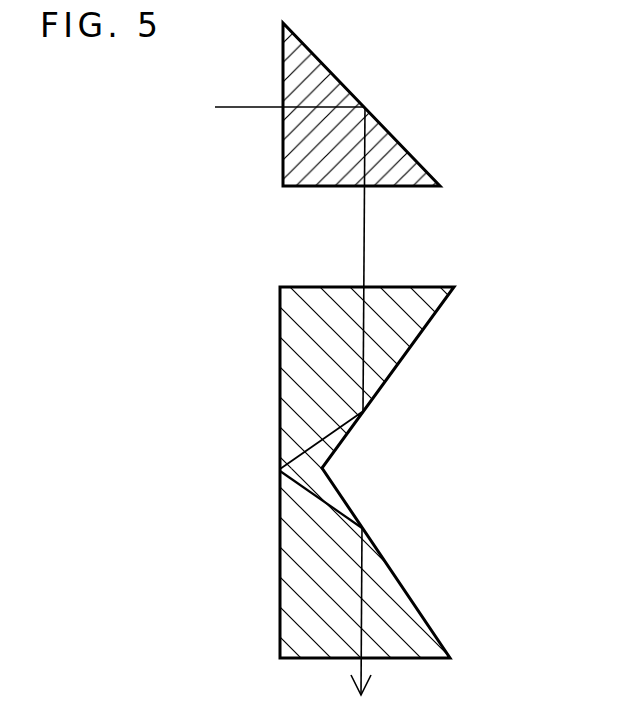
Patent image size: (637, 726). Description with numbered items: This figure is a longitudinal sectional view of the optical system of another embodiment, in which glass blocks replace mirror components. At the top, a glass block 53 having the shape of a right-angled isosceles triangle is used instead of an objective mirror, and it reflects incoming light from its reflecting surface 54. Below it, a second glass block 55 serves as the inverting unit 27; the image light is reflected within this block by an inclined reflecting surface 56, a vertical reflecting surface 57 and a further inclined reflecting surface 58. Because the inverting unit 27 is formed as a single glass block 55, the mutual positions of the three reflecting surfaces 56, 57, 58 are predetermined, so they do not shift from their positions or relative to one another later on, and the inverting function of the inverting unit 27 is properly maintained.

The inverting unit 27 is at (432, 423).
The glass block 53 is at (302, 148).
The reflecting surface 54 is at (390, 134).
The glass block 55 is at (300, 372).
The inclined reflecting surface 56 is at (403, 359).
The vertical reflecting surface 57 is at (278, 497).
The inclined reflecting surface 58 is at (397, 577).